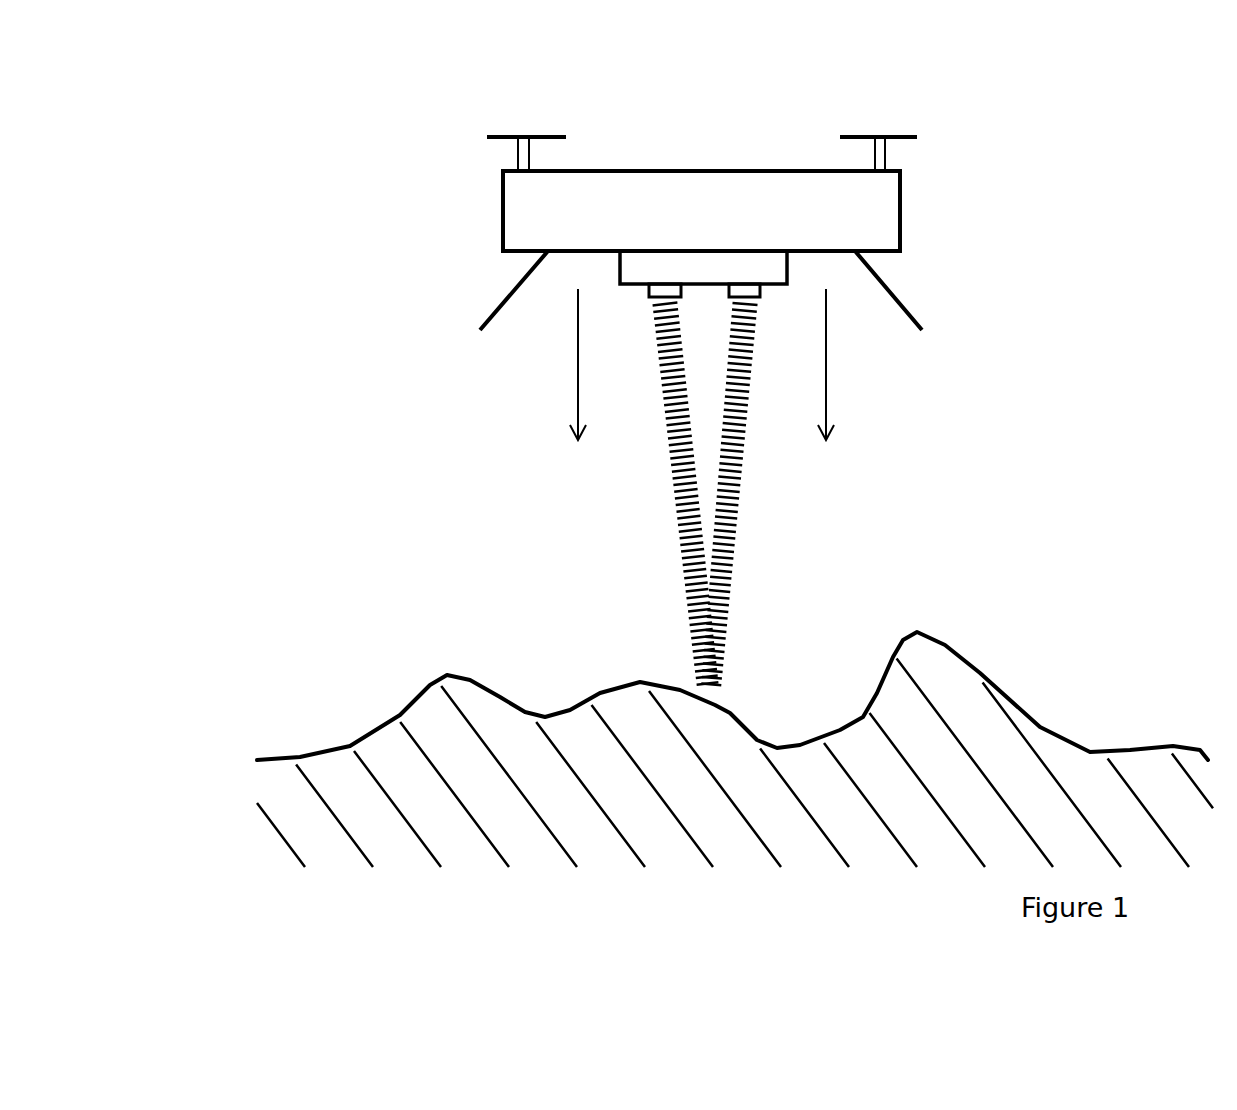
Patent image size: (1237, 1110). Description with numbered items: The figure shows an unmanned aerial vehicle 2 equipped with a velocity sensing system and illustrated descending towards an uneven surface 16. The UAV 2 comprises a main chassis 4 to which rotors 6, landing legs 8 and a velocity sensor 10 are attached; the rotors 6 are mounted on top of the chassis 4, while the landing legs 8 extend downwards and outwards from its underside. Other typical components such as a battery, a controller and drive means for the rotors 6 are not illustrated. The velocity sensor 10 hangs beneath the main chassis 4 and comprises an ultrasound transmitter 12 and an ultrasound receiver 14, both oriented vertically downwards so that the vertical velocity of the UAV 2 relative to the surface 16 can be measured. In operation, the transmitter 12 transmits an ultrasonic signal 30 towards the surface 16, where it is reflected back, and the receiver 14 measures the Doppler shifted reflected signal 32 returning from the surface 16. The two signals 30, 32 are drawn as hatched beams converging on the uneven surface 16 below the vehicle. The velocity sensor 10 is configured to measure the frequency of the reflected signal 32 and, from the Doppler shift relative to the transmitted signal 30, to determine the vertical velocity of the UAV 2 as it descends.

The unmanned aerial vehicle 2 is at (363, 177).
The main chassis 4 is at (873, 200).
The rotors 6 is at (548, 118).
The landing legs 8 is at (912, 312).
The velocity sensor 10 is at (773, 268).
The ultrasound transmitter 12 is at (653, 300).
The ultrasound receiver 14 is at (745, 294).
The uneven surface 16 is at (933, 667).
The ultrasonic signal 30 is at (752, 503).
The reflected signal 32 is at (658, 474).